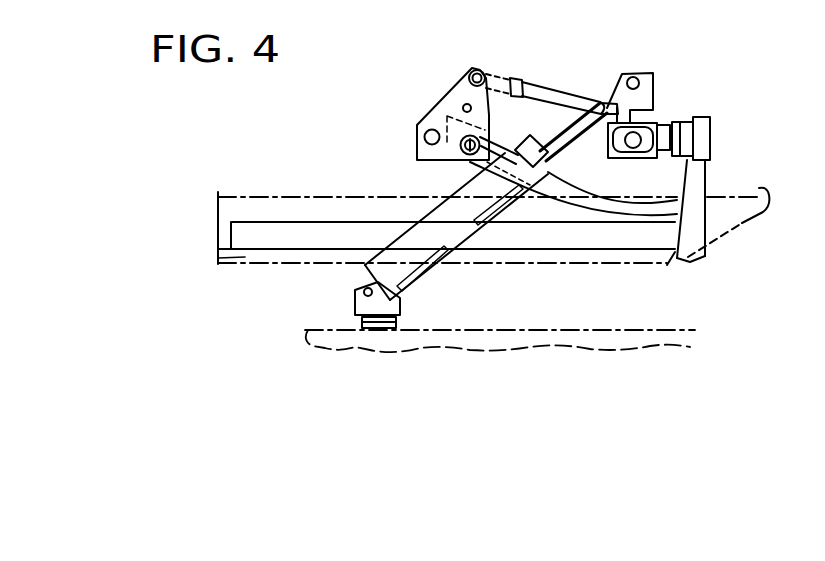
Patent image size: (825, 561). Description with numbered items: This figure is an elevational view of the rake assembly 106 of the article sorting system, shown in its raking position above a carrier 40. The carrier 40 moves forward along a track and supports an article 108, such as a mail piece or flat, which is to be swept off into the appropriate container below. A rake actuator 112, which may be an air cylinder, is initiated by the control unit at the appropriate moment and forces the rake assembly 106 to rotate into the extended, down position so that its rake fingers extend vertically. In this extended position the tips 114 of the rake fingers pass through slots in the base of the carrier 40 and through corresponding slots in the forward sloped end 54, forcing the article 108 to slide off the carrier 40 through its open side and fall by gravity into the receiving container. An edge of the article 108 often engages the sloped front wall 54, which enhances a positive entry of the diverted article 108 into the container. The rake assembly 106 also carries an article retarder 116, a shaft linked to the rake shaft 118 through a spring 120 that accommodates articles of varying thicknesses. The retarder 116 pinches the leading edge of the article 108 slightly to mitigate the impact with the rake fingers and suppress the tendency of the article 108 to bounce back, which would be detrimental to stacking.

The carrier 40 is at (218, 258).
The forward sloped end 54 is at (764, 213).
The rake assembly 106 is at (420, 108).
The article 108 is at (257, 233).
The rake actuator 112 is at (420, 283).
The tips 114 is at (688, 258).
The article retarder 116 is at (597, 212).
The rake shaft 118 is at (456, 160).
The spring 120 is at (514, 145).